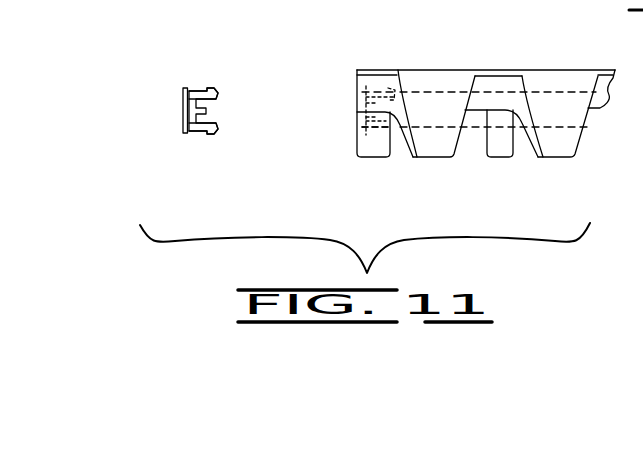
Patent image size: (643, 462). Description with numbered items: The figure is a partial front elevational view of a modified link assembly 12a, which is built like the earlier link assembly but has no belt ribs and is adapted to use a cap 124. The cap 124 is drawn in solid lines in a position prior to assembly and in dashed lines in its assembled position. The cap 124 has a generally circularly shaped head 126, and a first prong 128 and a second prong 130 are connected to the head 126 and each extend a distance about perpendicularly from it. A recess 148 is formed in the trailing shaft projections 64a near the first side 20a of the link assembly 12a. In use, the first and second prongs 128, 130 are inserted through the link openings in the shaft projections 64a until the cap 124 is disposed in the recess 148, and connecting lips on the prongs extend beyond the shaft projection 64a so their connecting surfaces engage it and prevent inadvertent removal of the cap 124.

The cap 124 is at (177, 115).
The head 126 is at (183, 112).
The first prong 128 is at (205, 133).
The second prong 130 is at (198, 91).
The link assembly 12a is at (448, 117).
The first side 20a is at (357, 92).
The recess 148 is at (357, 128).
The trailing shaft projections 64a is at (356, 127).